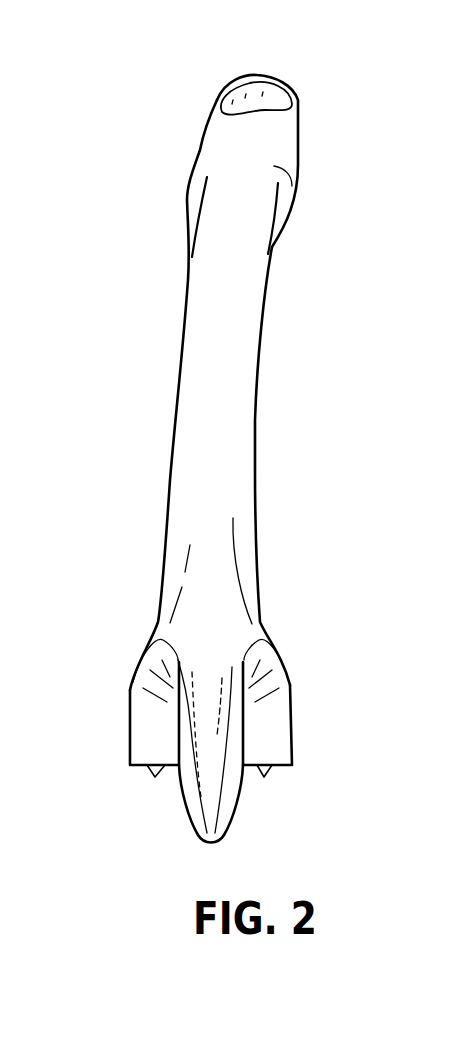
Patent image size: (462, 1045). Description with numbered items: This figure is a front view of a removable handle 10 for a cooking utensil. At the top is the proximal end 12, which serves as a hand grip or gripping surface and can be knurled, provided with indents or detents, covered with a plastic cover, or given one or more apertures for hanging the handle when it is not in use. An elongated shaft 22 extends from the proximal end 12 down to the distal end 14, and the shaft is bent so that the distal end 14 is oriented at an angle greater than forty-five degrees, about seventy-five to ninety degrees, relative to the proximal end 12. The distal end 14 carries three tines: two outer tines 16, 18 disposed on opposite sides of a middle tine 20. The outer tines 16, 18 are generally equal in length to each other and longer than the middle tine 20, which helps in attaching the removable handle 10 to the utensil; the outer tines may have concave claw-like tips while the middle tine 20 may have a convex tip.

The removable handle 10 is at (247, 437).
The proximal end 12 is at (298, 103).
The distal end 14 is at (226, 689).
The outer tine 16 is at (283, 727).
The outer tine 18 is at (140, 722).
The middle tine 20 is at (228, 795).
The elongated shaft 22 is at (262, 385).